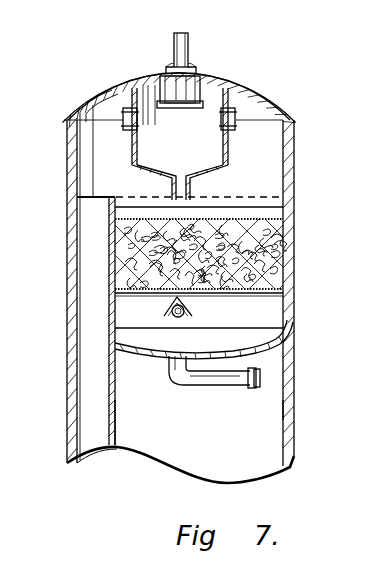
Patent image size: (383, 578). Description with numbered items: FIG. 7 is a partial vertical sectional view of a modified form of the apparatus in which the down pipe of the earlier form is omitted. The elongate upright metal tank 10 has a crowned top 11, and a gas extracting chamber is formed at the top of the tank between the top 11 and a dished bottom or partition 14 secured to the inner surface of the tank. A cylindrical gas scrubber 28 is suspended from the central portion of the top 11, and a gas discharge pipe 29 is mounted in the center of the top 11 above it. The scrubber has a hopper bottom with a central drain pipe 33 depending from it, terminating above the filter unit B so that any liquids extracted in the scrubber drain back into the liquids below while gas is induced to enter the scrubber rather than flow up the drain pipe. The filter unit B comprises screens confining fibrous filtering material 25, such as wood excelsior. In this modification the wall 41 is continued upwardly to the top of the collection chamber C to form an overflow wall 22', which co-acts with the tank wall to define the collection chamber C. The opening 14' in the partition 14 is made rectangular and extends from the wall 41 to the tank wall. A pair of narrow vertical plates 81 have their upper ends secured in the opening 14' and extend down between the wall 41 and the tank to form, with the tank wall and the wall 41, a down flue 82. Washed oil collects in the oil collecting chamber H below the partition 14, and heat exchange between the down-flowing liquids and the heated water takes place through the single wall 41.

The tank 10 is at (295, 158).
The crowned top 11 is at (283, 100).
The gas discharge pipe 29 is at (190, 46).
The gas scrubber 28 is at (230, 145).
The drain pipe 33 is at (196, 186).
The overflow wall 22' is at (71, 321).
The narrow vertical plates 81 is at (78, 278).
The down flue 82 is at (78, 368).
The filter unit B is at (286, 245).
The filtering material 25 is at (288, 263).
The collection chamber C is at (286, 304).
The dished bottom or partition 14 is at (229, 340).
The opening 14' is at (190, 369).
The wall 41 is at (115, 412).
The oil collecting chamber H is at (284, 410).